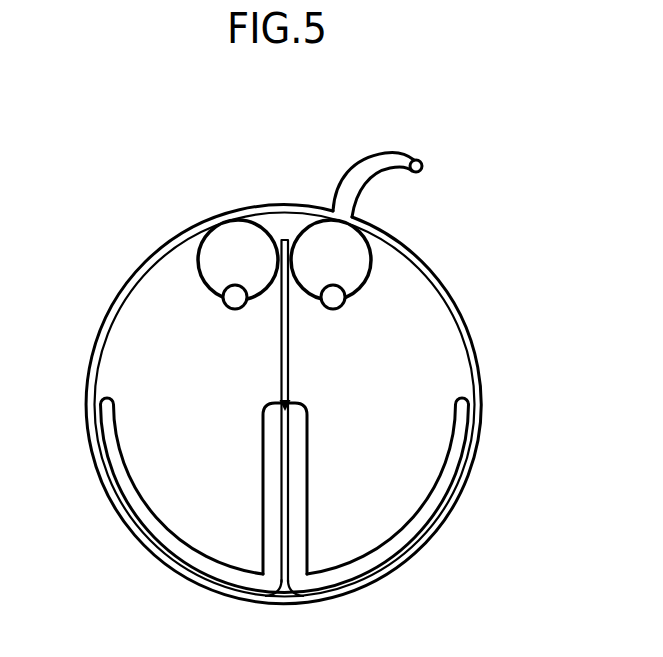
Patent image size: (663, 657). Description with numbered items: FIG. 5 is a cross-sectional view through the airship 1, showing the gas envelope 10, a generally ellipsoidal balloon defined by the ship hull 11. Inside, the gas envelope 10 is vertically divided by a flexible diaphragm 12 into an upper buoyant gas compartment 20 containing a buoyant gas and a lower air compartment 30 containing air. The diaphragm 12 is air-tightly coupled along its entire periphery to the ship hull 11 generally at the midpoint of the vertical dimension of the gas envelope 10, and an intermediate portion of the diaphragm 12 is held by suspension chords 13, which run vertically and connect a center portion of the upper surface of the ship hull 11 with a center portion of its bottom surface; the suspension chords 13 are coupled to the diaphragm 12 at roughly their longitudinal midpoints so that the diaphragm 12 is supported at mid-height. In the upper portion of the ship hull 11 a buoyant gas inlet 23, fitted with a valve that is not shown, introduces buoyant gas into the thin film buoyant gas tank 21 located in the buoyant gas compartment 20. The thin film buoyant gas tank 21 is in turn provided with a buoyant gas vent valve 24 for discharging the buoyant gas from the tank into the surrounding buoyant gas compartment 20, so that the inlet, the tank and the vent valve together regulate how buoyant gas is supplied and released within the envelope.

The device assembly 1 is at (173, 205).
The gas envelope 10 is at (451, 292).
The ship hull 11 is at (466, 332).
The diaphragm 12 is at (140, 502).
The suspension chords 13 is at (294, 360).
The buoyant gas compartment 20 is at (145, 318).
The thin film buoyant gas tank 21 is at (199, 265).
The buoyant gas inlet 23 is at (370, 157).
The buoyant gas vent valve 24 is at (223, 309).
The air compartment 30 is at (158, 542).